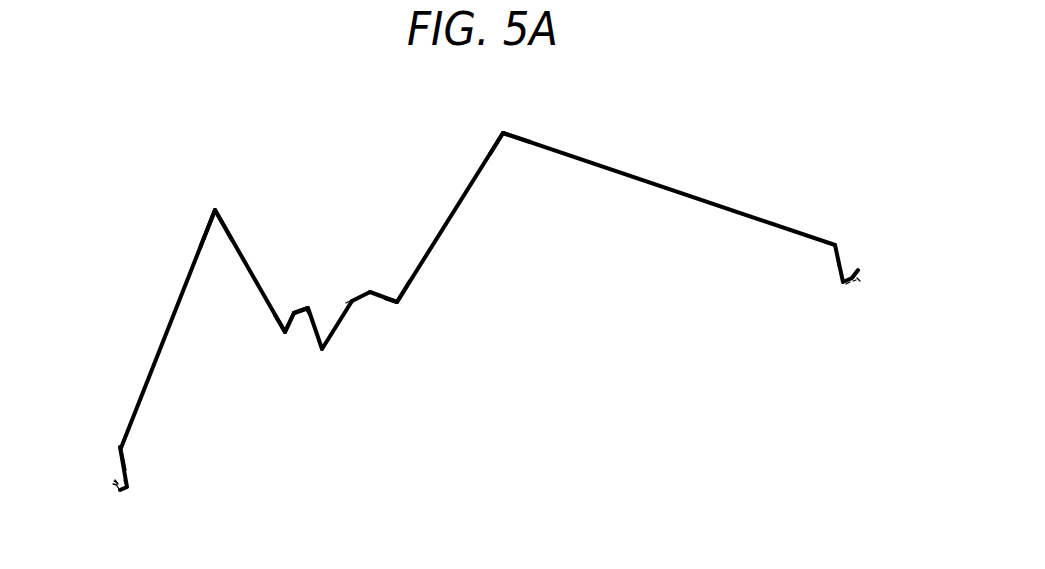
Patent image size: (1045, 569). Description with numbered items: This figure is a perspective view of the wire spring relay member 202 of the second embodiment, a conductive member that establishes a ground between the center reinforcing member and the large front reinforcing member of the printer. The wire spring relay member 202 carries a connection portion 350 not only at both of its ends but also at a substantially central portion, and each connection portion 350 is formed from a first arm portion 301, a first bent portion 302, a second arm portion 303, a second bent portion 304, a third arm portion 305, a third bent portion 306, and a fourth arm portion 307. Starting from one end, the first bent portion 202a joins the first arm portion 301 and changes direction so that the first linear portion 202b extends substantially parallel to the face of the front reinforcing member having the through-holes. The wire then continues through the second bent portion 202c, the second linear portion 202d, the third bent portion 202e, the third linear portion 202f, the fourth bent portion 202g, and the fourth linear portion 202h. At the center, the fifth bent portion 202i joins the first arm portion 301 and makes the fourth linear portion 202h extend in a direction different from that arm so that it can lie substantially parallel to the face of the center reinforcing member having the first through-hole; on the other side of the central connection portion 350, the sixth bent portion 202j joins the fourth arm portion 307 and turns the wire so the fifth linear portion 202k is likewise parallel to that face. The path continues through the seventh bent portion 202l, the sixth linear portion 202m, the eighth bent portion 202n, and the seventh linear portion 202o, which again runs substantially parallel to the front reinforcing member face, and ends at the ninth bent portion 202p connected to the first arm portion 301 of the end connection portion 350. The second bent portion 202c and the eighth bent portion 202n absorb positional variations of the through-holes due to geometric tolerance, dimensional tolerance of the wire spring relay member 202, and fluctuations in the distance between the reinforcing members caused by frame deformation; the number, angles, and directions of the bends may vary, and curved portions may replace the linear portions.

The wire spring relay member 202 is at (320, 110).
The first bent portion 202a is at (121, 449).
The first linear portion 202b is at (160, 347).
The second bent portion 202c is at (215, 210).
The second linear portion 202d is at (249, 270).
The third bent portion 202e is at (283, 333).
The third linear portion 202f is at (284, 324).
The fourth bent portion 202g is at (293, 311).
The fourth linear portion 202h is at (307, 307).
The fifth bent portion 202i is at (350, 302).
The sixth bent portion 202j is at (386, 297).
The fifth linear portion 202k is at (397, 300).
The seventh bent portion 202l is at (400, 302).
The sixth linear portion 202m is at (450, 221).
The eighth bent portion 202n is at (503, 131).
The seventh linear portion 202o is at (640, 178).
The ninth bent portion 202p is at (835, 250).
The first arm portion 301 is at (127, 466).
The first bent portion 302 is at (127, 488).
The second arm portion 303 is at (122, 492).
The second bent portion 304 is at (117, 488).
The third arm portion 305 is at (115, 483).
The third bent portion 306 is at (117, 483).
The fourth arm portion 307 is at (115, 482).
The connection portion 350 is at (188, 497).